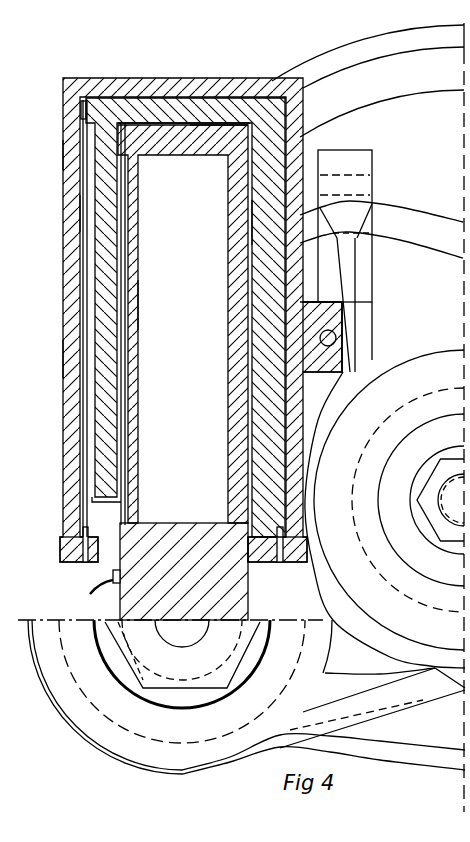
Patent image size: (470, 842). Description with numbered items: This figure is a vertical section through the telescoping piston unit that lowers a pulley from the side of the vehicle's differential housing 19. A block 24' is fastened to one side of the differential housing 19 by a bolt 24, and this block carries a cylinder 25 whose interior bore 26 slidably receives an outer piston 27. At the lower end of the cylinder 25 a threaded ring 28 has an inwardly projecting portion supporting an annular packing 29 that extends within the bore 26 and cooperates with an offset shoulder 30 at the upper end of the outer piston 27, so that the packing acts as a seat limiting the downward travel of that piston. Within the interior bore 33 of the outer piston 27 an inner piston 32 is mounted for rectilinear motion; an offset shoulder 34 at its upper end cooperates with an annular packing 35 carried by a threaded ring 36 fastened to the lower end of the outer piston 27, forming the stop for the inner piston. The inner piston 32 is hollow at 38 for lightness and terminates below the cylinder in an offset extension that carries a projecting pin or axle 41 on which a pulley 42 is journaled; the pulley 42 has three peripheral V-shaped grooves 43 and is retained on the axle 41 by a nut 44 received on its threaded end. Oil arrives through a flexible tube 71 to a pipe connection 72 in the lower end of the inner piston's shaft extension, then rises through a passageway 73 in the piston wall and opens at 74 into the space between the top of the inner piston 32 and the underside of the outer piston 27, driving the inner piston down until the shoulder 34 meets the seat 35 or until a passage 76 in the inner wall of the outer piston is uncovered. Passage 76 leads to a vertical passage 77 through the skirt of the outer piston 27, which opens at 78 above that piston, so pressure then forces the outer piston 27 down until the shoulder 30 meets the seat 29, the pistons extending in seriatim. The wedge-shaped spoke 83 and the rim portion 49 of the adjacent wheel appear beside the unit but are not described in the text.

The differential housing 19 is at (420, 141).
The bolt 24 is at (354, 337).
The block 24' is at (356, 337).
The cylinder 25 is at (63, 113).
The interior bore 26 is at (71, 208).
The outer piston 27 is at (247, 110).
The threaded ring 28 is at (60, 546).
The annular packing 29 is at (78, 562).
The offset shoulder 30 is at (63, 153).
The inner piston 32 is at (138, 183).
The interior bore 33 is at (272, 221).
The offset shoulder 34 is at (230, 158).
The annular packing 35 is at (248, 573).
The threaded ring 36 is at (284, 562).
The hollow 38 is at (138, 303).
The pin or axle 41 is at (182, 648).
The pulley 42 is at (148, 721).
The V-shaped grooves 43 is at (237, 733).
The nut 44 is at (180, 683).
The rim arcs 49 is at (382, 224).
The flexible tube 71 is at (88, 591).
The pipe connection 72 is at (120, 589).
The passageway 73 is at (128, 441).
The opening 74 is at (130, 121).
The passage 76 is at (121, 502).
The passage 77 is at (71, 356).
The opening 78 is at (100, 99).
The spoke 83 is at (358, 236).